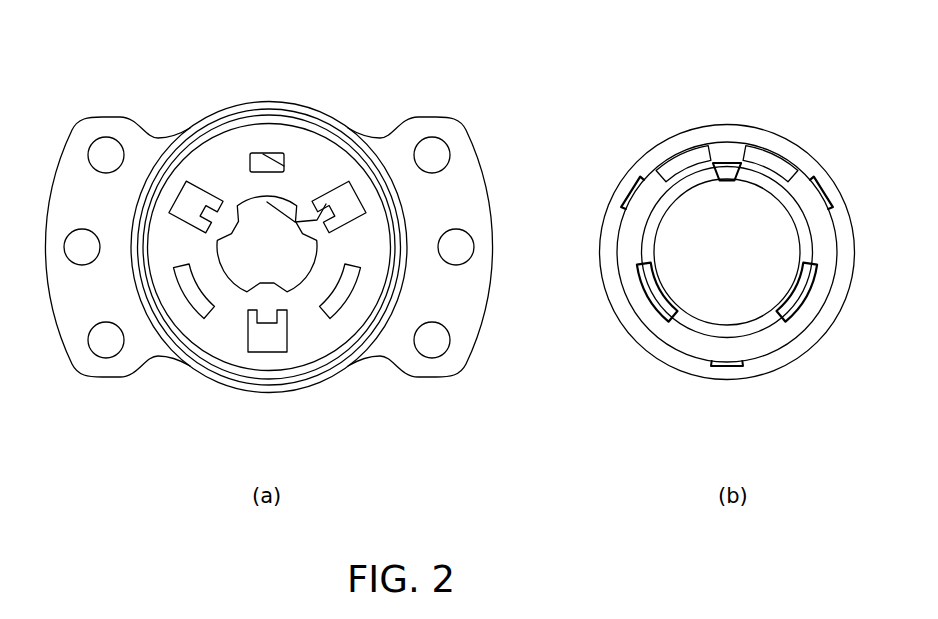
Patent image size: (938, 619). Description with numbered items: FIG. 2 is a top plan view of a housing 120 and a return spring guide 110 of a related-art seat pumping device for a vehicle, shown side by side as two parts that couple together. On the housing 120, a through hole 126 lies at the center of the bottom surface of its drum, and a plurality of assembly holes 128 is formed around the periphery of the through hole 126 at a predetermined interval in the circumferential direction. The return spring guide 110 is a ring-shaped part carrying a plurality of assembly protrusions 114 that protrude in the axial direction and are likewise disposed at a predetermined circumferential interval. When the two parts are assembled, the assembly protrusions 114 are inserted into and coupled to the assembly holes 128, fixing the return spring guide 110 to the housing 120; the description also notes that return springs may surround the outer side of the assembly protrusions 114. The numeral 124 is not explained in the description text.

The return spring guide 110 is at (634, 142).
The assembly protrusions 114 is at (728, 168).
The housing 120 is at (175, 107).
The disk plate 124 is at (222, 148).
The through hole 126 is at (321, 214).
The assembly holes 128 is at (284, 165).